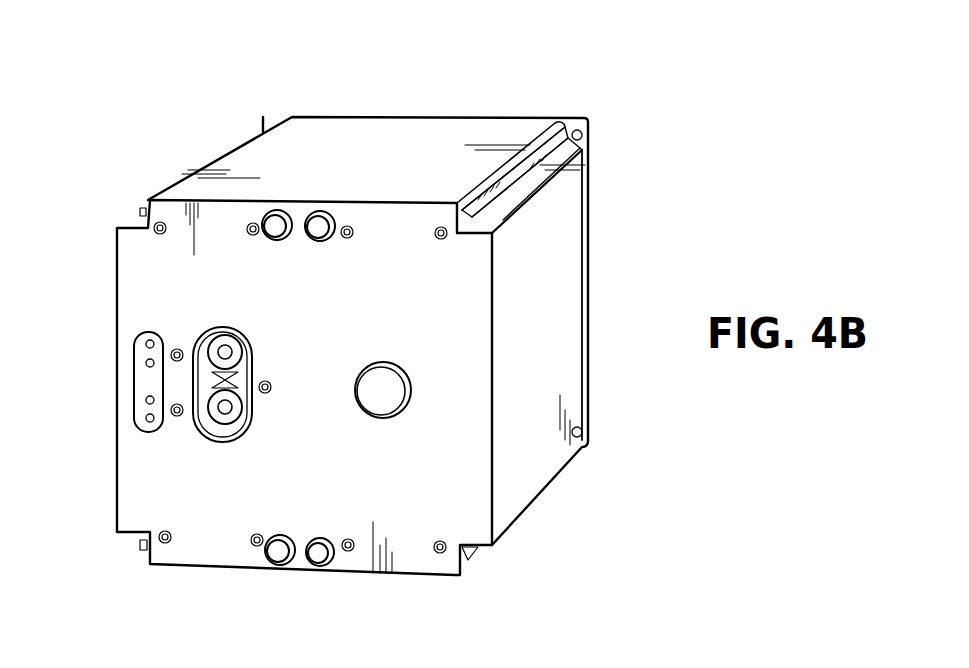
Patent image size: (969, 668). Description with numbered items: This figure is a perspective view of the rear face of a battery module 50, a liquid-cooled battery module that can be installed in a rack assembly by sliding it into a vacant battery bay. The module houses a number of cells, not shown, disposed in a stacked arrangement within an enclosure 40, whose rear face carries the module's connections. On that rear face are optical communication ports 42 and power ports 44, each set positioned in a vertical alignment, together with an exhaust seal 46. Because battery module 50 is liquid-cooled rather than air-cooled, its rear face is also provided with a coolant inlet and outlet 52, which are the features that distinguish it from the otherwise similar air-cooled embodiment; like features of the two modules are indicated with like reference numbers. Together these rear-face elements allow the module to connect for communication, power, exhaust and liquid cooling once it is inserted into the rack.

The enclosure 40 is at (557, 262).
The optical communication ports 42 is at (150, 363).
The power ports 44 is at (217, 417).
The exhaust seal 46 is at (386, 397).
The battery module 50 is at (635, 74).
The coolant inlet and outlet 52 is at (317, 222).